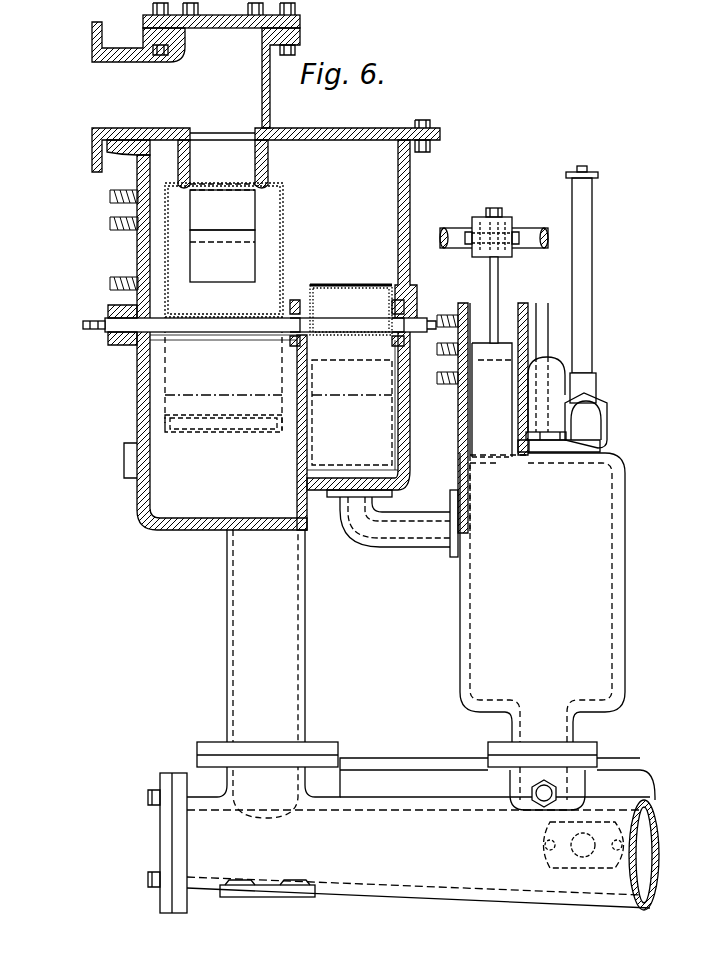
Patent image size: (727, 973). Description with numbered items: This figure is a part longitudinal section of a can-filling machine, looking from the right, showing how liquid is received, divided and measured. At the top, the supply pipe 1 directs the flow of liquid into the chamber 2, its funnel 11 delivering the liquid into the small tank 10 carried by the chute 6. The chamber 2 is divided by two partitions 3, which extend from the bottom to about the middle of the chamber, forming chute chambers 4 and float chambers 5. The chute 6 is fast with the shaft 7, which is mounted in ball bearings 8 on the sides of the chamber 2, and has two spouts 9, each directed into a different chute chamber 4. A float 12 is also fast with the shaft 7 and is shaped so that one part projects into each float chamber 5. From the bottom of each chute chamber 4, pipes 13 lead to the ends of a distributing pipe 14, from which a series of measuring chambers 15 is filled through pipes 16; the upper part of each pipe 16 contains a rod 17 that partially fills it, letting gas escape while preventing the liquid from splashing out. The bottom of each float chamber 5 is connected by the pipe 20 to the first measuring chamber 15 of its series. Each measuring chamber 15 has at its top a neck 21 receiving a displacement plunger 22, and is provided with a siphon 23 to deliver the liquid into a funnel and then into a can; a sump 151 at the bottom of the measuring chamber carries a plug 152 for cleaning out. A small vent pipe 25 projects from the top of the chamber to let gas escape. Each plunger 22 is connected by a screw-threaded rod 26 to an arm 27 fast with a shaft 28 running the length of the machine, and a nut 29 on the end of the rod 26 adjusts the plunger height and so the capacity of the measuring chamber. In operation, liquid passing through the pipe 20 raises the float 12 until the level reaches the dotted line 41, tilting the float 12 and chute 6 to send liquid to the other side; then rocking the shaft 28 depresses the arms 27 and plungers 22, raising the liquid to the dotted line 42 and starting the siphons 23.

The supply pipe 1 is at (196, 87).
The chamber 2 is at (399, 182).
The partitions 3 is at (160, 338).
The chute chambers 4 is at (223, 414).
The float chambers 5 is at (399, 466).
The chute 6 is at (282, 270).
The shaft 7 is at (103, 320).
The ball bearings 8 is at (107, 336).
The spouts 9 is at (220, 432).
The small tank 10 is at (264, 242).
The funnel 11 is at (248, 202).
The float 12 is at (397, 437).
The pipes 13 is at (267, 674).
The distributing pipe 14 is at (403, 835).
The measuring chamber 15 is at (542, 620).
The pipes 16 is at (583, 337).
The rod 17 is at (580, 172).
The pipe 20 is at (392, 523).
The neck 21 is at (459, 412).
The displacement plunger 22 is at (492, 400).
The siphon 23 is at (597, 386).
The vent pipe 25 is at (540, 310).
The rod 26 is at (489, 277).
The arm 27 is at (500, 240).
The shaft 28 is at (447, 238).
The nut 29 is at (490, 208).
The dotted line 41 is at (152, 397).
The dotted line 42 is at (340, 366).
The sump 151 is at (530, 778).
The plug 152 is at (543, 797).